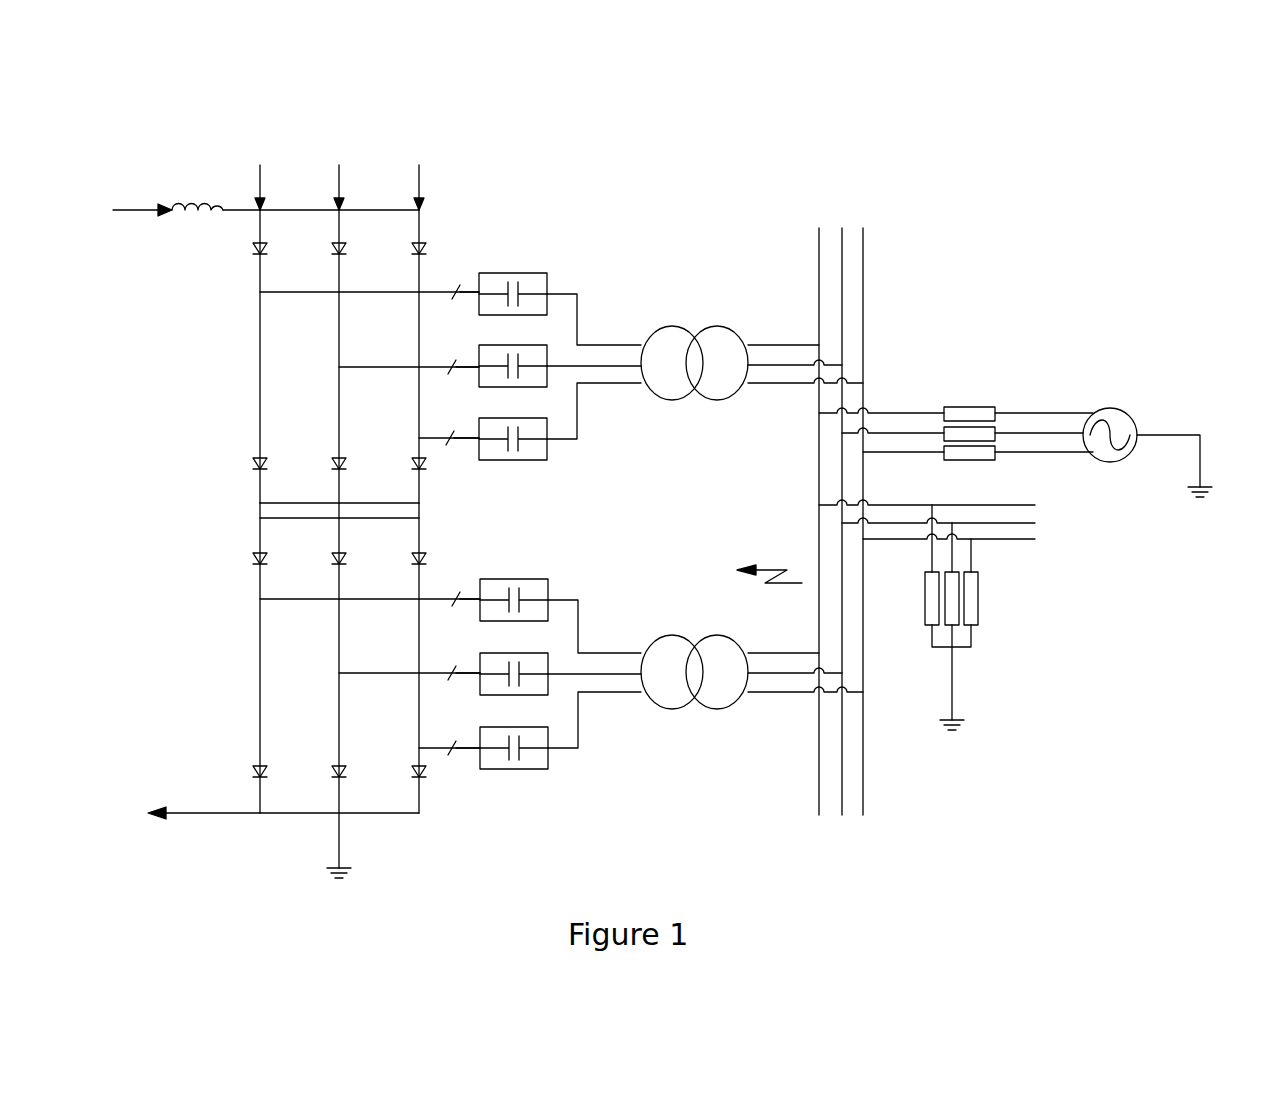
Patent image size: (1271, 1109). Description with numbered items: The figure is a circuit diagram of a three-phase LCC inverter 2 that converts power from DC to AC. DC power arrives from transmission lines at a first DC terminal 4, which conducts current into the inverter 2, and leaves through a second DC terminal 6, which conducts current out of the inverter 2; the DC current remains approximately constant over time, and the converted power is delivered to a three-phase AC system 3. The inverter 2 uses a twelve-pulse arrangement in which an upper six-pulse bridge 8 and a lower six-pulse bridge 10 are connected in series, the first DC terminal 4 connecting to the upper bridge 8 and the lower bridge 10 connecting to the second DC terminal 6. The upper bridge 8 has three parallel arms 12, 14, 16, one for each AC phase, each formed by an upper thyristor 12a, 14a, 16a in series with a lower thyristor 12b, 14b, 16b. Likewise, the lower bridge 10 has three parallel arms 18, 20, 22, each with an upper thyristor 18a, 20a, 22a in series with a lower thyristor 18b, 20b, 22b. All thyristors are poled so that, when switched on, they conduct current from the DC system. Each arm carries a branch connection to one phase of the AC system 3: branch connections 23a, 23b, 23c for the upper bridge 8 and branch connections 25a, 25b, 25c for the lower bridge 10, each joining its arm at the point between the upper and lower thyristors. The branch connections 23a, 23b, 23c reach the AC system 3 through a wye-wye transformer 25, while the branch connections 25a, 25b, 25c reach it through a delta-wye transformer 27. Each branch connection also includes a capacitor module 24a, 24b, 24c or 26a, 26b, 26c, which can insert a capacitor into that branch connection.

The three-phase LCC inverter 2 is at (738, 228).
The three-phase AC system 3 is at (1192, 866).
The first DC terminal 4 is at (229, 207).
The second DC terminal 6 is at (216, 818).
The upper 6-pulse bridge 8 is at (291, 323).
The lower 6-pulse bridge 10 is at (288, 704).
The parallel arm 12 is at (213, 324).
The parallel arm 14 is at (252, 324).
The parallel arm 16 is at (292, 323).
The upper thyristor 12a is at (252, 251).
The lower thyristor 12b is at (257, 462).
The upper thyristor 14a is at (332, 250).
The lower thyristor 14b is at (337, 460).
The upper thyristor 16a is at (414, 250).
The lower thyristor 16b is at (417, 460).
The parallel arm 18 is at (215, 704).
The parallel arm 20 is at (266, 704).
The parallel arm 22 is at (294, 700).
The upper thyristor 18a is at (252, 560).
The lower thyristor 18b is at (257, 770).
The upper thyristor 20a is at (332, 560).
The lower thyristor 20b is at (337, 768).
The upper thyristor 22a is at (414, 560).
The lower thyristor 22b is at (417, 768).
The branch connection 23a is at (448, 288).
The branch connection 23b is at (450, 362).
The branch connection 23c is at (452, 436).
The capacitor module 24a is at (542, 290).
The capacitor module 24b is at (548, 364).
The capacitor module 24c is at (548, 434).
The wye-wye transformer 25 is at (723, 345).
The branch connection 25a is at (456, 606).
The branch connection 25b is at (452, 680).
The branch connection 25c is at (452, 755).
The capacitor module 26a is at (541, 611).
The capacitor module 26b is at (541, 686).
The capacitor module 26c is at (541, 760).
The delta-wye transformer 27 is at (725, 692).